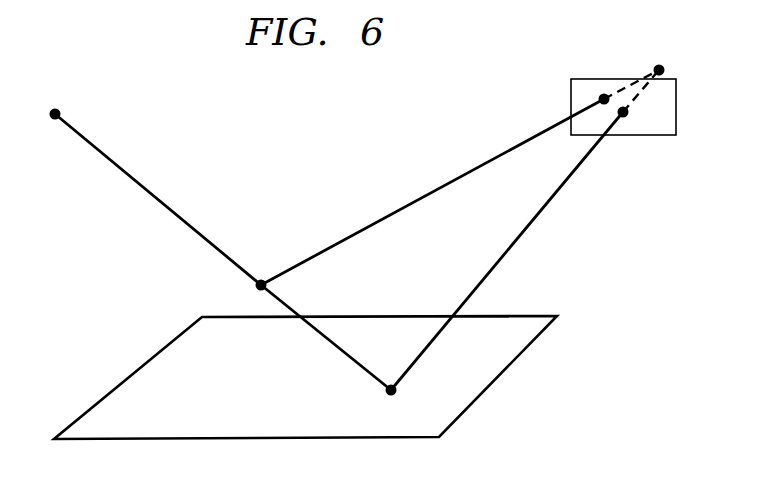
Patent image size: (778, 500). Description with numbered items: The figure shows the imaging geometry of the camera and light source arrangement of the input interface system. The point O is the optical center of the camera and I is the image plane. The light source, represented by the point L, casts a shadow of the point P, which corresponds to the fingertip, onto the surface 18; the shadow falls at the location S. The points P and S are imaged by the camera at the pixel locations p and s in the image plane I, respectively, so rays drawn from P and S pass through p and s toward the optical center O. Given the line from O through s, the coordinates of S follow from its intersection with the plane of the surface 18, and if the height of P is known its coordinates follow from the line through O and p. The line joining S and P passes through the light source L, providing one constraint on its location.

The surface 18 is at (472, 382).
The image plane I is at (631, 107).
The light source point L is at (44, 112).
The point P is at (251, 289).
The shadow location S is at (381, 395).
The optical center O is at (669, 59).
The pixel location of P p is at (592, 93).
The pixel location of S s is at (630, 116).